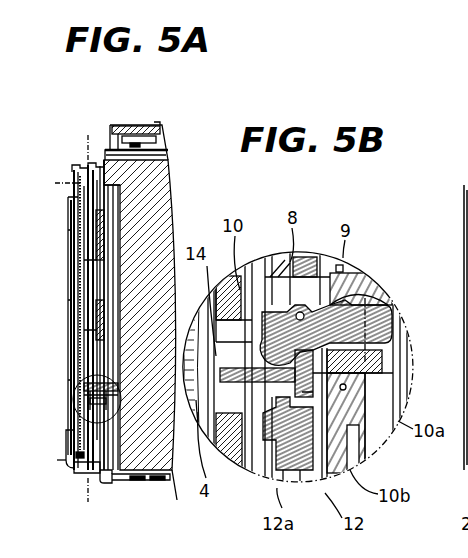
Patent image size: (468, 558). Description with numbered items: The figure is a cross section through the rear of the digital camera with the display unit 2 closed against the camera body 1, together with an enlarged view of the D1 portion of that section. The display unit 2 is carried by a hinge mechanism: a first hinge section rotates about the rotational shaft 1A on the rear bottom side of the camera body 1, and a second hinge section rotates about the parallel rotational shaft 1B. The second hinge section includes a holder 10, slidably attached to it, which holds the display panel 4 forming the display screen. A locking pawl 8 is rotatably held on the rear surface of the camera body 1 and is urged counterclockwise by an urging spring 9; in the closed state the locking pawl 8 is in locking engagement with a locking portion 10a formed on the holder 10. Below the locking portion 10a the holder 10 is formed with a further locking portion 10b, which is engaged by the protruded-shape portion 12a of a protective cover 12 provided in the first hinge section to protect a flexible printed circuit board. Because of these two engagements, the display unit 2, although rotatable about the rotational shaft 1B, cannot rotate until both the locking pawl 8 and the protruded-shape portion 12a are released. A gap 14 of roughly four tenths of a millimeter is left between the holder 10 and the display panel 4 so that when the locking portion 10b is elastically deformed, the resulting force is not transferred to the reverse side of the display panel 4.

In FIG. 5A, the camera body 1 is at (170, 167).
In FIG. 5A, the rotational shaft 1A is at (112, 483).
In FIG. 5A, the rotational shaft 1B is at (73, 164).
In FIG. 5A, the display unit 2 is at (76, 470).
In FIG. 5A, the D1 portion D1 is at (74, 392).
In FIG. 5B, the display panel 4 is at (198, 410).
In FIG. 5B, the locking pawl 8 is at (278, 335).
In FIG. 5B, the urging spring 9 is at (343, 264).
In FIG. 5B, the holder 10 is at (240, 290).
In FIG. 5B, the locking portion 10a is at (318, 372).
In FIG. 5B, the locking portion 10b is at (302, 392).
In FIG. 5B, the protective cover 12 is at (320, 466).
In FIG. 5B, the protruded-shape portion 12a is at (283, 456).
In FIG. 5B, the gap 14 is at (216, 356).